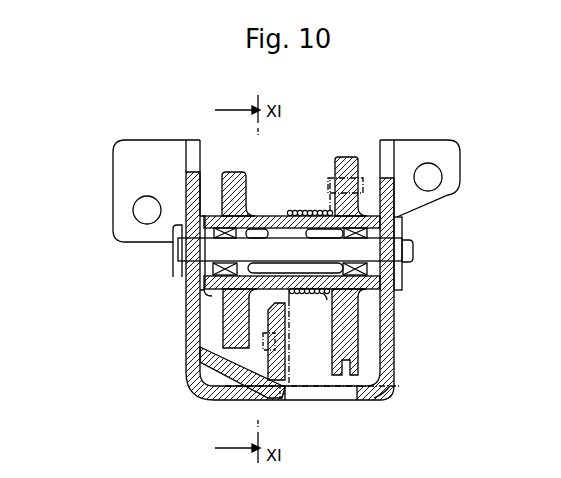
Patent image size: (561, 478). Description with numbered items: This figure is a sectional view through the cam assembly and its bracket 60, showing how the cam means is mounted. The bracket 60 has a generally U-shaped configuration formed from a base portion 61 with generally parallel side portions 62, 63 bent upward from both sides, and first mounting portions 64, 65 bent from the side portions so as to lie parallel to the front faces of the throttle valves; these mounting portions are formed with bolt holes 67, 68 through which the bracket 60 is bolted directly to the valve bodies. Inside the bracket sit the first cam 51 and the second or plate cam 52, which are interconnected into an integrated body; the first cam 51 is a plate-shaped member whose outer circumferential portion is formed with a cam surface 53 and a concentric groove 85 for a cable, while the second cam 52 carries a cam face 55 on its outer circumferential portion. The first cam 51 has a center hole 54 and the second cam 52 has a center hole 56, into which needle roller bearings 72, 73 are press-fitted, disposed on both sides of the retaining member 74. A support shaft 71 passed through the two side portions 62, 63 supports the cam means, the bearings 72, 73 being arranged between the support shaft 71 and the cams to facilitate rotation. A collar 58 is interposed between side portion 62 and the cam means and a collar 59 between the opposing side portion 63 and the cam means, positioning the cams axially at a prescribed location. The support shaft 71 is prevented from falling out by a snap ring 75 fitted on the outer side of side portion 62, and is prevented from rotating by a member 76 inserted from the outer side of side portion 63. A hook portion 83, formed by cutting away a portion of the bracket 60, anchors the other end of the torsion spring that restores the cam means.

The first cam 51 is at (270, 265).
The second cam 52 is at (233, 288).
The cam surface 53 is at (347, 157).
The center hole 54 is at (323, 298).
The cam face 55 is at (234, 178).
The center hole 56 is at (267, 222).
The collar 58 is at (297, 213).
The collar 59 is at (296, 293).
The bracket 60 is at (393, 387).
The base portion 61 is at (376, 393).
The side portion 62 is at (395, 335).
The side portion 63 is at (191, 332).
The first mounting portion 64 is at (417, 148).
The first mounting portion 65 is at (152, 147).
The bolt hole 67 is at (433, 173).
The bolt hole 68 is at (134, 209).
The support shaft 71 is at (390, 252).
The needle roller bearing 72 is at (400, 228).
The needle roller bearing 73 is at (202, 267).
The retaining member 74 is at (193, 372).
The snap ring 75 is at (402, 277).
The member 76 is at (178, 225).
The hook portion 83 is at (278, 388).
The groove 85 is at (347, 373).